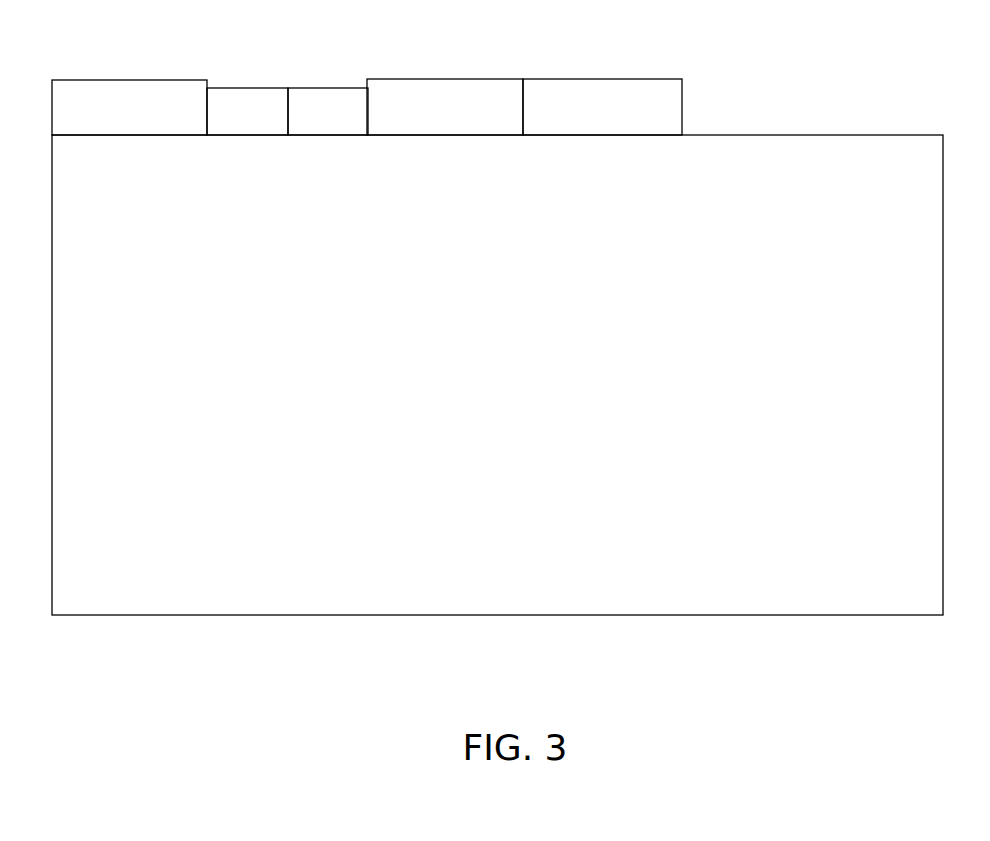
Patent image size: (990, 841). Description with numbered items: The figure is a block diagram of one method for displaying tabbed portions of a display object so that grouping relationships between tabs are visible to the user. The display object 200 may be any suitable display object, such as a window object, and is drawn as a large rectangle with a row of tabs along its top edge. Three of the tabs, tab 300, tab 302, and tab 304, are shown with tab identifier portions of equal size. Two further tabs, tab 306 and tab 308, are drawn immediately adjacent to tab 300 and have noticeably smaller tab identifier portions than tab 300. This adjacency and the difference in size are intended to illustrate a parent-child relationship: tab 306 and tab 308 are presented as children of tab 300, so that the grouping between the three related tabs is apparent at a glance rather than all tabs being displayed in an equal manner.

The display object 200 is at (882, 616).
The tab 300 is at (128, 78).
The tab 302 is at (445, 77).
The tab 304 is at (601, 78).
The tab 306 is at (250, 86).
The tab 308 is at (327, 86).